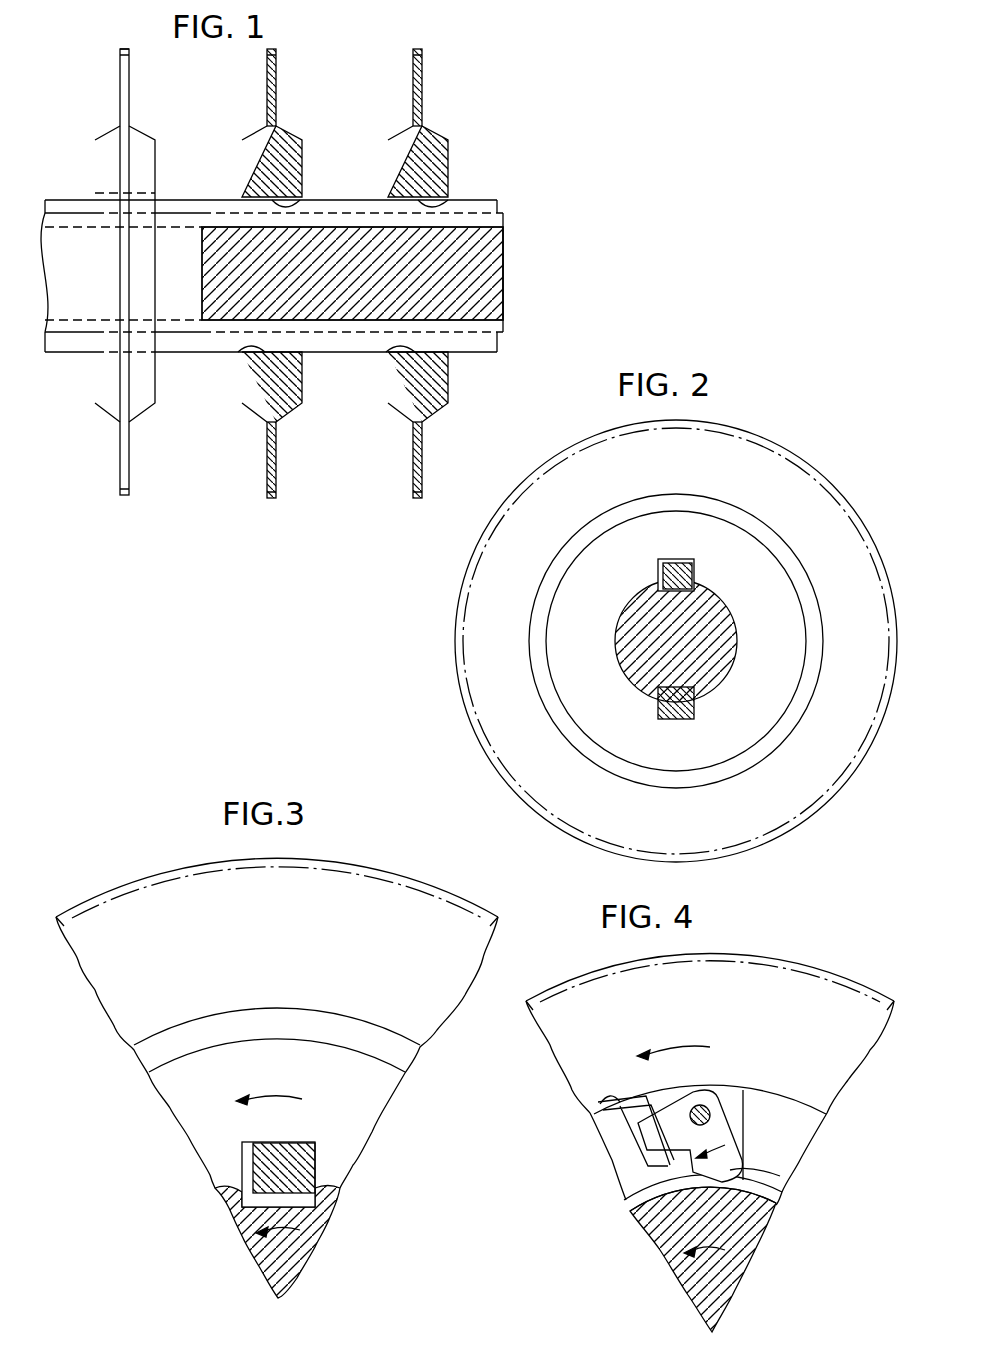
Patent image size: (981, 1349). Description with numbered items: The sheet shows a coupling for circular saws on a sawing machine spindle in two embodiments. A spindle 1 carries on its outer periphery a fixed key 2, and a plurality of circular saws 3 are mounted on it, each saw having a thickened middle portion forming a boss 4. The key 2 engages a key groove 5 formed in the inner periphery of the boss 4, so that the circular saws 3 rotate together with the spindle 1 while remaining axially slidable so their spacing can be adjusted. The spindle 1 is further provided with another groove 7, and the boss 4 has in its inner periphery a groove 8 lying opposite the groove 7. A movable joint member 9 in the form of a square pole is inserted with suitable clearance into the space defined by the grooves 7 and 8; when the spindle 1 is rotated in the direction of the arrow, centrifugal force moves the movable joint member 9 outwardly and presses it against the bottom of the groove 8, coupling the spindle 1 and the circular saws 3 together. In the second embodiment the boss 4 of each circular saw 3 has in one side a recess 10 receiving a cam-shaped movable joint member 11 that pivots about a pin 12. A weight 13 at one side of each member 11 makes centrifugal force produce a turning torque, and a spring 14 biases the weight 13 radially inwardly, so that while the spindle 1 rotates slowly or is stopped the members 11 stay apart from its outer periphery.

In FIG. 1, the spindle 1 is at (78, 305).
In FIG. 2, the spindle 1 is at (720, 670).
In FIG. 3, the spindle 1 is at (225, 1213).
In FIG. 4, the spindle 1 is at (692, 1262).
In FIG. 1, the key 2 is at (478, 348).
In FIG. 2, the key 2 is at (676, 712).
In FIG. 1, the circular saws 3 is at (124, 115).
In FIG. 2, the circular saws 3 is at (482, 594).
In FIG. 3, the circular saws 3 is at (450, 972).
In FIG. 4, the circular saws 3 is at (803, 987).
In FIG. 1, the boss 4 is at (105, 160).
In FIG. 2, the boss 4 is at (558, 687).
In FIG. 3, the boss 4 is at (375, 1100).
In FIG. 4, the boss 4 is at (788, 1142).
In FIG. 1, the key groove 5 is at (257, 350).
In FIG. 1, the groove 7 is at (498, 209).
In FIG. 2, the groove 7 is at (660, 585).
In FIG. 3, the groove 7 is at (293, 1203).
In FIG. 1, the groove 8 is at (297, 207).
In FIG. 2, the groove 8 is at (700, 556).
In FIG. 3, the groove 8 is at (241, 1157).
In FIG. 1, the movable joint member 9 is at (484, 205).
In FIG. 2, the movable joint member 9 is at (658, 572).
In FIG. 3, the movable joint member 9 is at (310, 1167).
In FIG. 4, the recess 10 is at (637, 1187).
In FIG. 4, the cam-shaped movable joint member 11 is at (742, 1175).
In FIG. 4, the pin 12 is at (712, 1103).
In FIG. 4, the weight 13 is at (638, 1128).
In FIG. 4, the spring 14 is at (607, 1097).